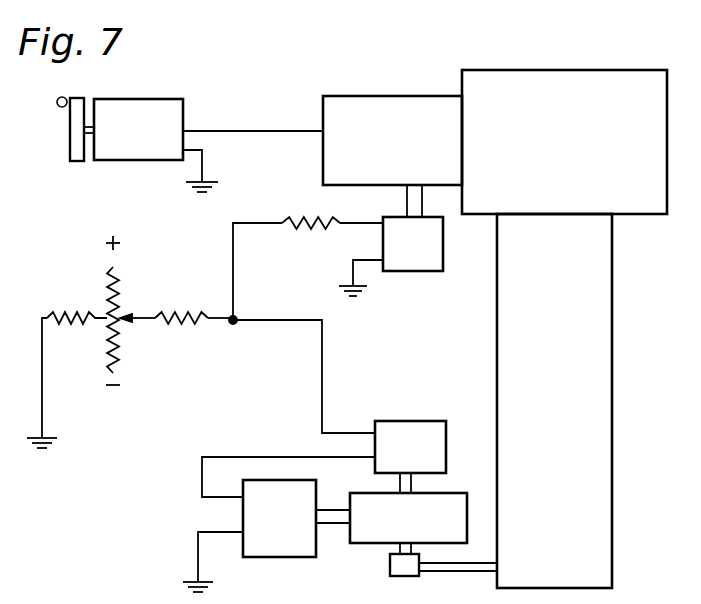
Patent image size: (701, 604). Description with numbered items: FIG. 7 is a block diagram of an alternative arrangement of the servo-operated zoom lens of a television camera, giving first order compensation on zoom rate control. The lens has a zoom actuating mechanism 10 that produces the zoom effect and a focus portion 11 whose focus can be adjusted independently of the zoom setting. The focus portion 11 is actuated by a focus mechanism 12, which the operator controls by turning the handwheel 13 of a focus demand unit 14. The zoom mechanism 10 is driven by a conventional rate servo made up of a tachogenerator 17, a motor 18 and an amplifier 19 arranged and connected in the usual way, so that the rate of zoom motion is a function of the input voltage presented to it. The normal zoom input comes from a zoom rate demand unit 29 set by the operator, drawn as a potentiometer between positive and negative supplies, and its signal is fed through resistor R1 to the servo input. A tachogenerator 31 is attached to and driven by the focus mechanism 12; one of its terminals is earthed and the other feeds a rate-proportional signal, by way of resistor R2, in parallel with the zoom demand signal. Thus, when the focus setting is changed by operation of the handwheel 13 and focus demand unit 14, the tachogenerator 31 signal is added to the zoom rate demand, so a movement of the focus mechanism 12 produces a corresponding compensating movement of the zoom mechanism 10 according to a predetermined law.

The zoom actuating mechanism 10 is at (560, 411).
The focus portion 11 is at (572, 153).
The focus mechanism 12 is at (402, 153).
The handwheel 13 is at (70, 135).
The focus demand unit 14 is at (147, 141).
The tachogenerator 17 is at (419, 458).
The motor 18 is at (417, 529).
The amplifier 19 is at (288, 529).
The zoom rate demand unit 29 is at (108, 298).
The tachogenerator 31 is at (422, 255).
The resistor R1 is at (181, 308).
The resistor R2 is at (311, 212).